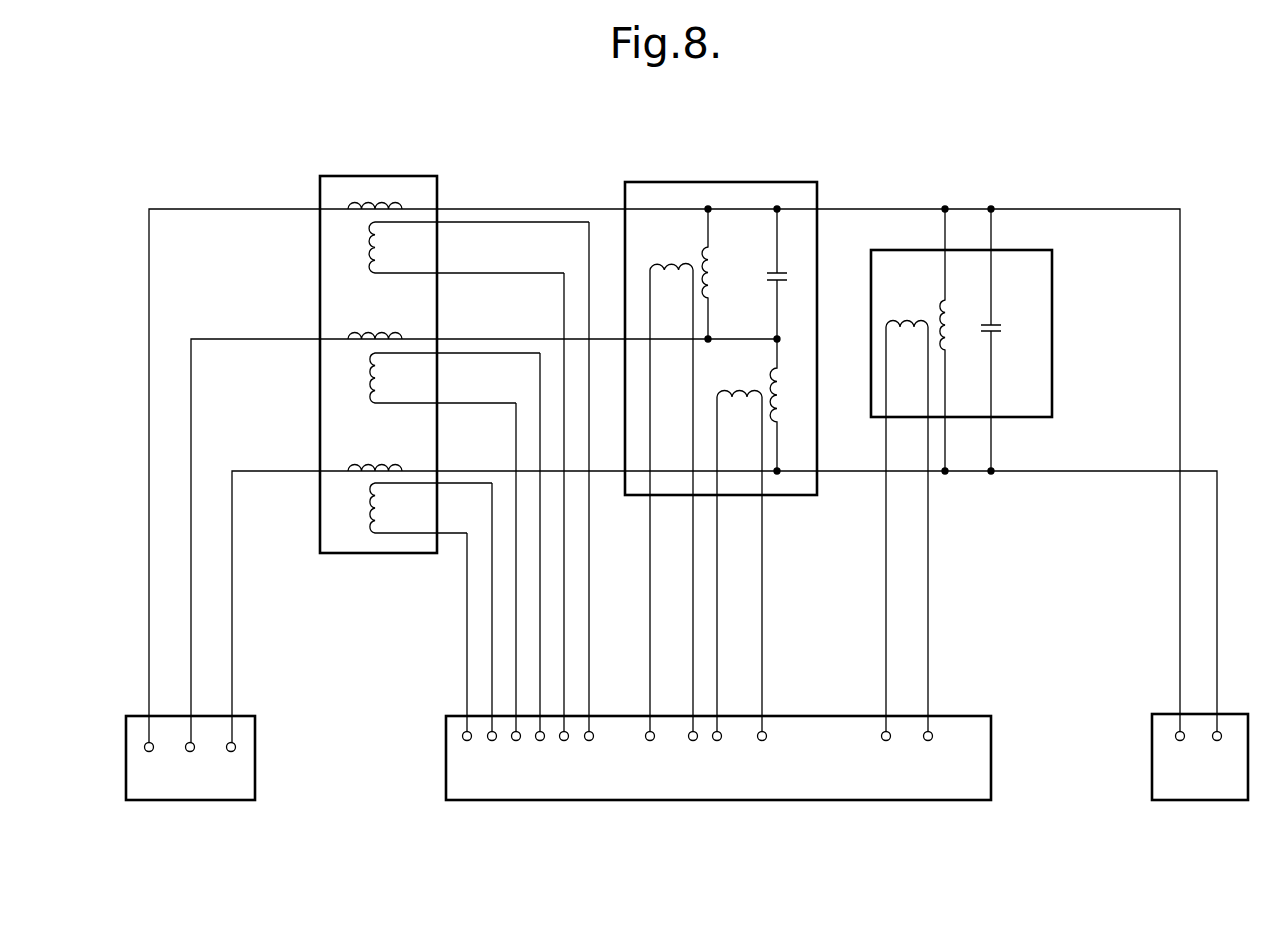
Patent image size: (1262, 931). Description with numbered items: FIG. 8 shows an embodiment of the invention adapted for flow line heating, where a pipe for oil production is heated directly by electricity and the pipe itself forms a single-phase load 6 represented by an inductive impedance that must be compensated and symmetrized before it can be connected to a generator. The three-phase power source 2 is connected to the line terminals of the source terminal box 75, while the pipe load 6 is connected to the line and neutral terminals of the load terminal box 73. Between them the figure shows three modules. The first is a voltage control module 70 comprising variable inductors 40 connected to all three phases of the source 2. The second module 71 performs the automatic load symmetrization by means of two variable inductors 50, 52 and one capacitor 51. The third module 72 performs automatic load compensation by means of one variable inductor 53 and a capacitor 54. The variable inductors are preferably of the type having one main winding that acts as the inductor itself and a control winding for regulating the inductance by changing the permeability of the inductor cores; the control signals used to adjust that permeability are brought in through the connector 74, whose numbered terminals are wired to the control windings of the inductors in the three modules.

The power source 2 is at (183, 806).
The single-phase load 6 is at (1198, 806).
The variable inductors 40 is at (352, 224).
The variable inductor 50 is at (698, 248).
The capacitor 51 is at (782, 272).
The variable inductor 52 is at (763, 366).
The variable inductor 53 is at (930, 297).
The capacitor 54 is at (999, 335).
The voltage control module 70 is at (426, 320).
The automatic load symmetrization module 71 is at (703, 410).
The automatic load compensation module 72 is at (944, 421).
The load terminal box 73 is at (1155, 750).
The connector 74 is at (455, 740).
The source terminal box 75 is at (133, 737).